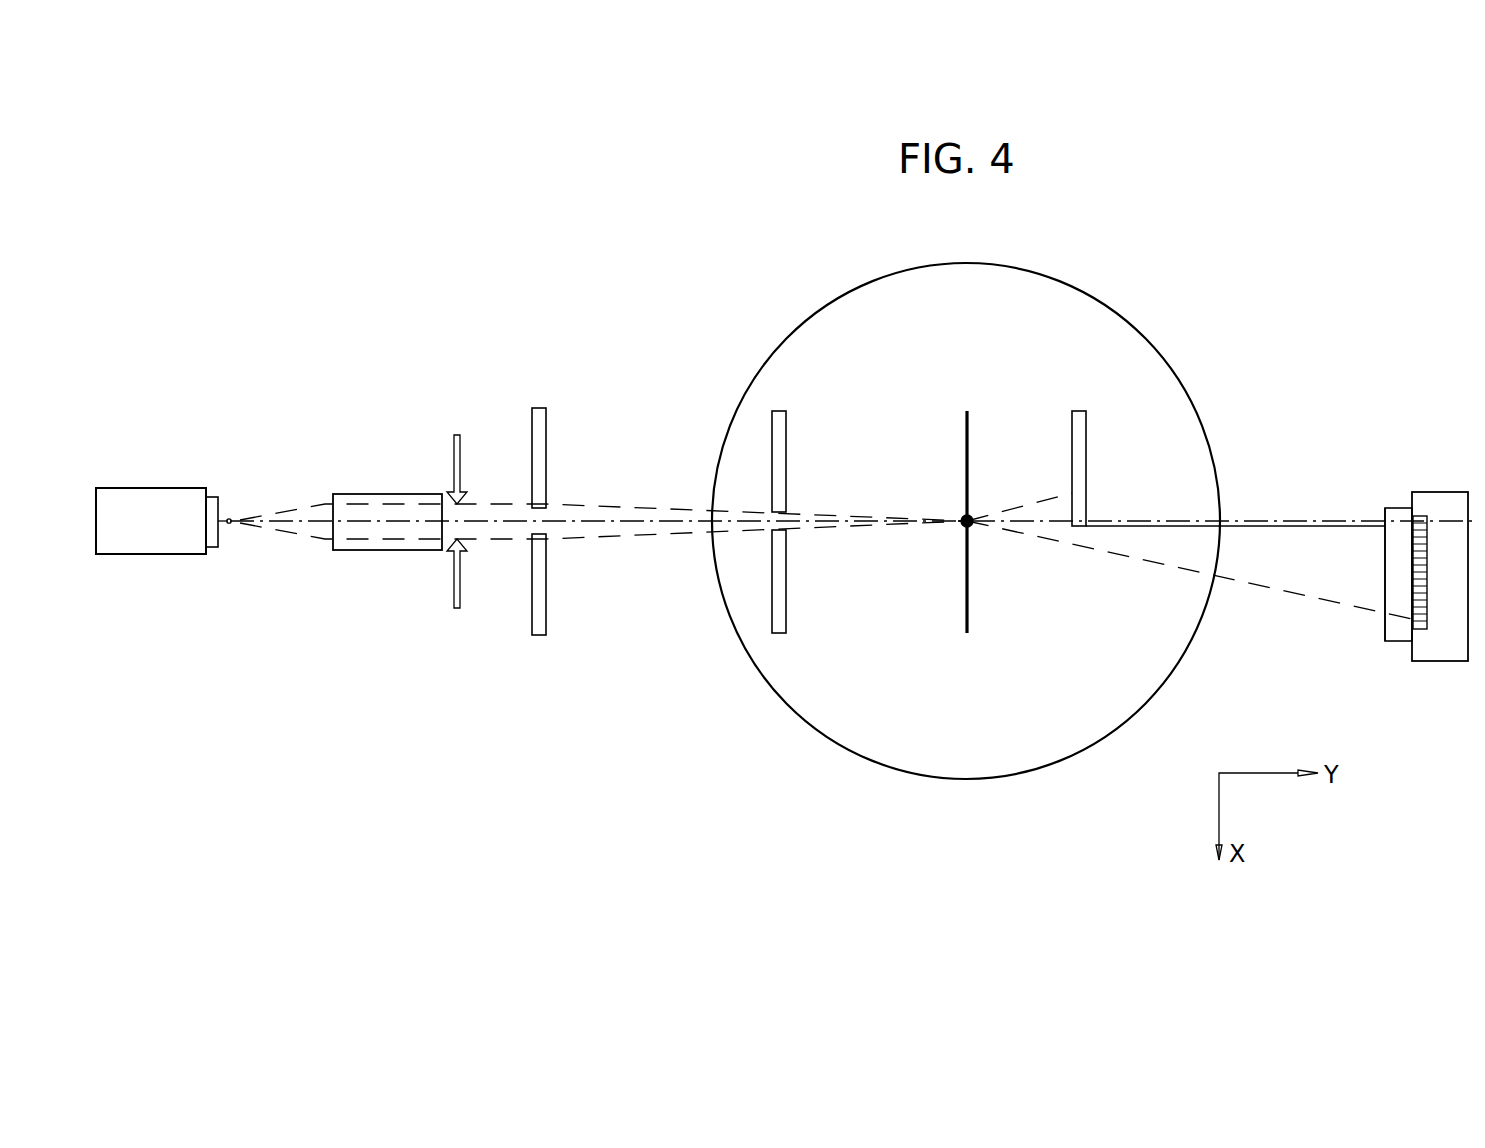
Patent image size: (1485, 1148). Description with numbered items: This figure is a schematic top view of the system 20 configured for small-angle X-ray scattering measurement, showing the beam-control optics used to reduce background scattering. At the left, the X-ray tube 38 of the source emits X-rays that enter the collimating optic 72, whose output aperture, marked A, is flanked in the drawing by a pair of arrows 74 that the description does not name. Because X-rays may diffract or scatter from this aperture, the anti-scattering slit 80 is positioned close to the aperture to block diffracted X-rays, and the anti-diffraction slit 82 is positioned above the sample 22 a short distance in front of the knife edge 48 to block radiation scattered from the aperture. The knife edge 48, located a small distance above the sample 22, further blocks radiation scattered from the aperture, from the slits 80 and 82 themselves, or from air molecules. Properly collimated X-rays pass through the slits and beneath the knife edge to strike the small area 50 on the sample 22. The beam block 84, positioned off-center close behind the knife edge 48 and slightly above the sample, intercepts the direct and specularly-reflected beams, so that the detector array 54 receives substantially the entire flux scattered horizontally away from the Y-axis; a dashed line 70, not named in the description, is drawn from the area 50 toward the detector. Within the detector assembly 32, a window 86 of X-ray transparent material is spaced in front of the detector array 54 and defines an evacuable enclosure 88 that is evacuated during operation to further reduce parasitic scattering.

The system 20 is at (1332, 278).
The sample 22 is at (1180, 366).
The detector assembly 32 is at (1445, 500).
The X-ray tube 38 is at (127, 488).
The knife edge 48 is at (969, 419).
The small area 50 is at (965, 516).
The detector array 54 is at (1428, 630).
The diffracted beam 70 is at (1280, 592).
The collimating optic 72 is at (364, 494).
The adjustment direction A 74 is at (497, 503).
The anti-scattering slit 80 is at (538, 636).
The anti-diffraction slit 82 is at (778, 634).
The beam block 84 is at (1077, 411).
The window 86 is at (1383, 625).
The evacuable enclosure 88 is at (1400, 632).